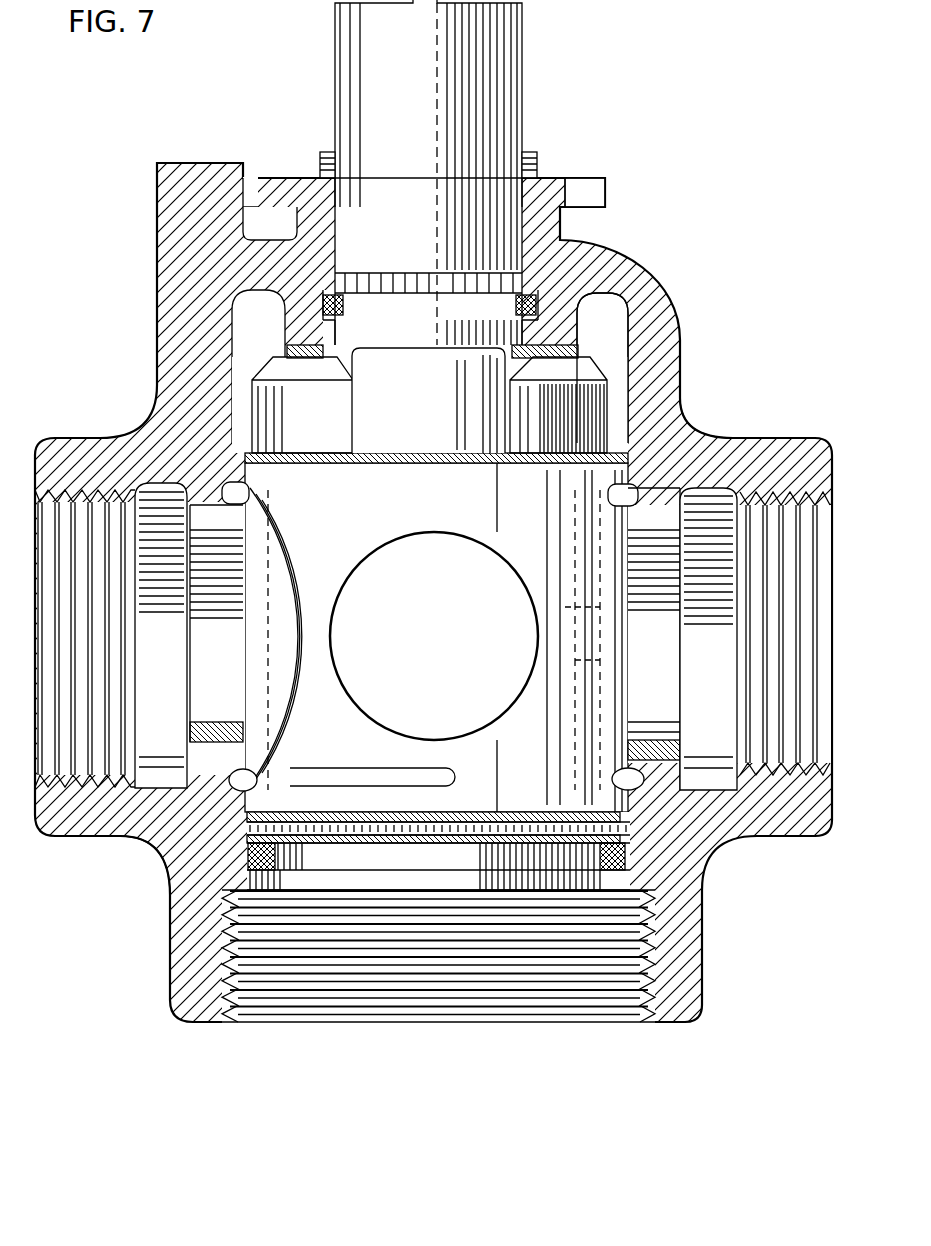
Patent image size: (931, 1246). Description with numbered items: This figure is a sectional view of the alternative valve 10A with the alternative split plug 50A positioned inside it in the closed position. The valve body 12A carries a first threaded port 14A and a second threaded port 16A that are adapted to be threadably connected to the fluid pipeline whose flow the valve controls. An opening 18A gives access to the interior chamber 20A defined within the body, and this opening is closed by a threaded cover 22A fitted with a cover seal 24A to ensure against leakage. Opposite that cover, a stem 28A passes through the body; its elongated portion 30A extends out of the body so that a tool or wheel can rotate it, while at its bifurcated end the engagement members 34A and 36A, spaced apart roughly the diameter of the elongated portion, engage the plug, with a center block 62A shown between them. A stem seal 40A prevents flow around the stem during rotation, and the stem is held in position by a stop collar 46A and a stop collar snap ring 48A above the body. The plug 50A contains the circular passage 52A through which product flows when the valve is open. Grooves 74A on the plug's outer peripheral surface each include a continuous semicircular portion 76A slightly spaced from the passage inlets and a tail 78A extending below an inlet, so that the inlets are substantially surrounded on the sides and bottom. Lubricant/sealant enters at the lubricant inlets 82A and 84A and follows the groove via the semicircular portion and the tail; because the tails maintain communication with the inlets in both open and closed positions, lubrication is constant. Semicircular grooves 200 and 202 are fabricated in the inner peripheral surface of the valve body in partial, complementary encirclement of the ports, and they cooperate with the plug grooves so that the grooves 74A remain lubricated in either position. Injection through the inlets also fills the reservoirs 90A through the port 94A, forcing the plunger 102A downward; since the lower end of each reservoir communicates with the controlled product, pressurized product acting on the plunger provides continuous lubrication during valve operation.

The valve 10A is at (777, 286).
The valve body 12A is at (668, 327).
The first threaded port 14A is at (766, 530).
The second threaded port 16A is at (110, 552).
The opening 18A is at (648, 1020).
The interior chamber 20A is at (630, 391).
The threaded cover 22A is at (297, 1003).
The cover seal 24A is at (622, 862).
The stem 28A is at (527, 58).
The elongated portion 30A is at (444, 84).
The engagement member 34A is at (340, 422).
The engagement member 36A is at (576, 422).
The stem seal 40A is at (577, 240).
The stop collar 46A is at (607, 190).
The stop collar snap ring 48A is at (540, 162).
The split plug 50A is at (692, 437).
The circular passage 52A is at (468, 594).
The center block 62A is at (446, 422).
The groove 74A is at (297, 565).
The semicircular portion 76A is at (293, 702).
The tail 78A is at (440, 768).
The lubricant inlet 82A is at (128, 838).
The lubricant inlet 84A is at (650, 782).
The reservoir 90A is at (273, 687).
The port 94A is at (250, 490).
The plunger 102A is at (270, 594).
The semicircular groove 200 is at (222, 490).
The semicircular groove 202 is at (640, 490).